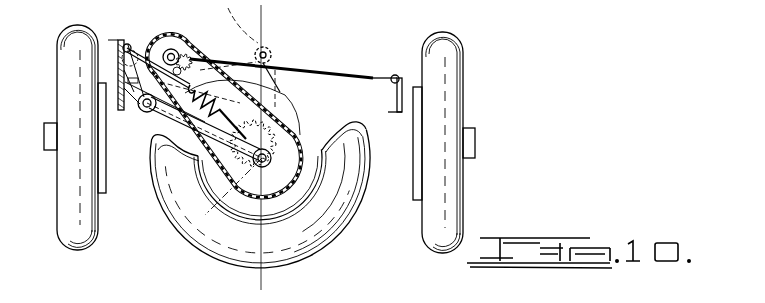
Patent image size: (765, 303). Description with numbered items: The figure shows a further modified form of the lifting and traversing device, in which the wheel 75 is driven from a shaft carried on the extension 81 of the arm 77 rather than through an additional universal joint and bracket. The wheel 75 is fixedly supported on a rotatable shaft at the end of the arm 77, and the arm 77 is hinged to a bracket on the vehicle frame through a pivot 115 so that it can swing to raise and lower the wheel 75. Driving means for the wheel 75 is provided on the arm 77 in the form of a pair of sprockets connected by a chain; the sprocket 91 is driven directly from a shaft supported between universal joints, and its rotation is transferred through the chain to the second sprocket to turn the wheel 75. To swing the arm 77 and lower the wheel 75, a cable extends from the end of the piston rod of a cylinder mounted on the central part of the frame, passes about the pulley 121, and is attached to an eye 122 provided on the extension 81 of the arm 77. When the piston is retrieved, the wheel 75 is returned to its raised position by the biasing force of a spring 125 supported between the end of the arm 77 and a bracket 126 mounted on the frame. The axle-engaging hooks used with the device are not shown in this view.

The wheel 75 is at (205, 234).
The arm 77 is at (265, 118).
The extension 81 is at (158, 64).
The sprocket 91 is at (187, 50).
The pivot 115 is at (142, 112).
The pulley 121 is at (375, 77).
The eye 122 is at (257, 53).
The spring 125 is at (265, 71).
The bracket 126 is at (126, 46).